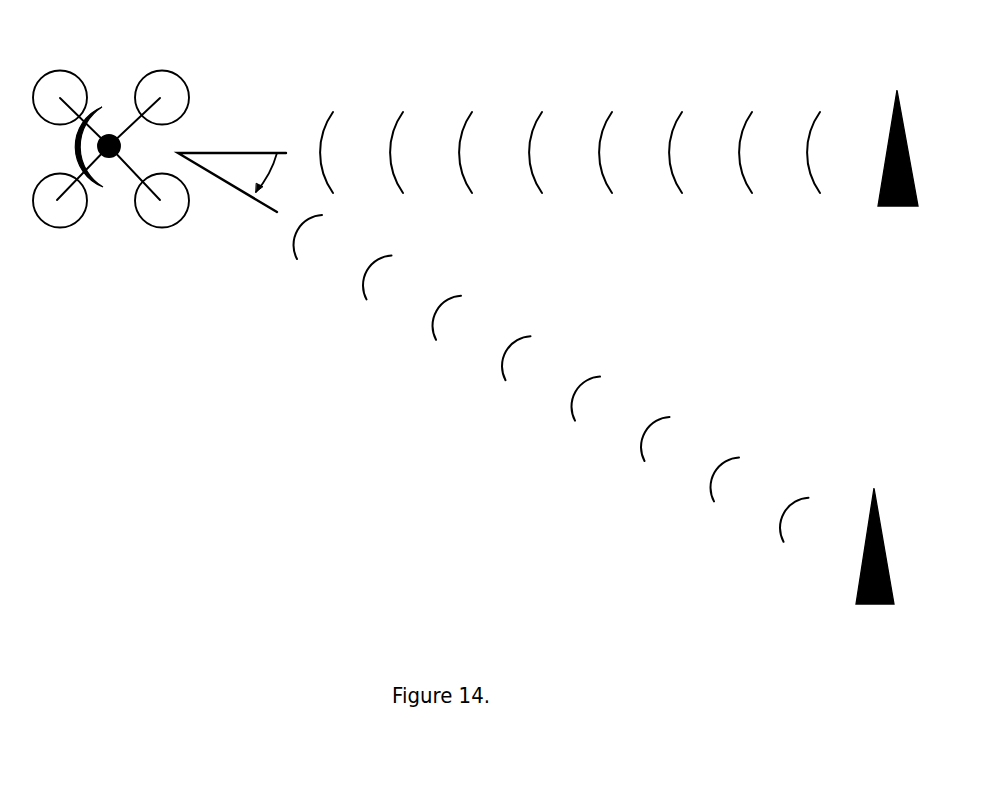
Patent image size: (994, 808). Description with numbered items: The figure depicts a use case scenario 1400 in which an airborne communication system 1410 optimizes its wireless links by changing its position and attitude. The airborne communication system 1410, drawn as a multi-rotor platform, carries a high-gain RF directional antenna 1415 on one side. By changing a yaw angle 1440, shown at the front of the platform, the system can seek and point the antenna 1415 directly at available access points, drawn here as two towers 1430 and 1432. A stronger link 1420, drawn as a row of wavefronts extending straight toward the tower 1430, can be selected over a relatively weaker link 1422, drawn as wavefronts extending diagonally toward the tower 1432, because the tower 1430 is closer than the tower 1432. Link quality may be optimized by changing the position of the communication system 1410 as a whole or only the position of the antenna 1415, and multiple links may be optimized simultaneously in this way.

The use case scenario 1400 is at (447, 605).
The airborne communication system 1410 is at (162, 208).
The high-gain RF directional antenna 1415 is at (102, 107).
The stronger link 1420 is at (558, 125).
The weaker link 1422 is at (566, 370).
The tower 1430 is at (892, 124).
The tower 1432 is at (871, 517).
The yaw angle 1440 is at (249, 172).